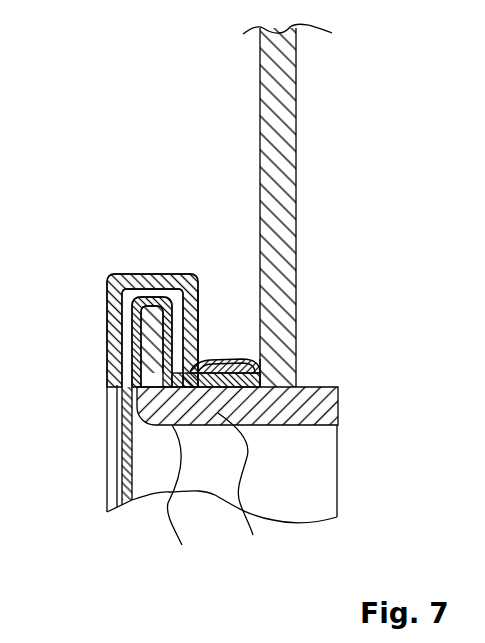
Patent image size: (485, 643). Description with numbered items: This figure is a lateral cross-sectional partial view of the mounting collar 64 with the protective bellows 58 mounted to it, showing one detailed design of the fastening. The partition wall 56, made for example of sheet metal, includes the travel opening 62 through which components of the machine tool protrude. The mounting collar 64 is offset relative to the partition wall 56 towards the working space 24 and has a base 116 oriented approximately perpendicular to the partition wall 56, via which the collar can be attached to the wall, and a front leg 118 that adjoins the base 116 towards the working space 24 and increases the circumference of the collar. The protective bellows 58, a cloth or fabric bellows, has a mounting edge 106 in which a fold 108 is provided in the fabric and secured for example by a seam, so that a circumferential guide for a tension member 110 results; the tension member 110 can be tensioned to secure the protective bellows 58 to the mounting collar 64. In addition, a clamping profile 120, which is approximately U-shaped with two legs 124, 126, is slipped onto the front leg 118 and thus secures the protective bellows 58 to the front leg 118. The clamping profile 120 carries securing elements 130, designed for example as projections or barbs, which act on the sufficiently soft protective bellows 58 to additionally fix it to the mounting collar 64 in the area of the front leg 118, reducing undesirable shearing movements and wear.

The partition wall 56 is at (275, 88).
The mounting edge 106 is at (337, 417).
The fold 108 is at (207, 364).
The tension member 110 is at (262, 373).
The base 116 is at (251, 490).
The front leg 118 is at (107, 367).
The clamping profile 120 is at (150, 272).
The leg 124 is at (108, 306).
The leg 126 is at (199, 298).
The securing element 130 is at (126, 288).
The working space 24 is at (72, 466).
The protective bellows 58 is at (107, 503).
The travel opening 62 is at (311, 486).
The mounting collar 64 is at (186, 500).